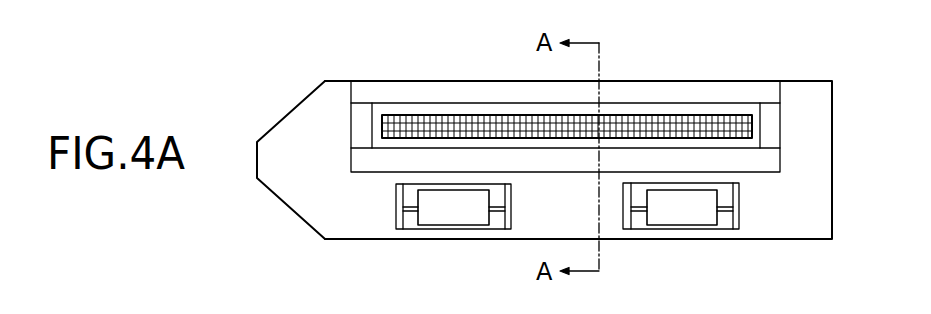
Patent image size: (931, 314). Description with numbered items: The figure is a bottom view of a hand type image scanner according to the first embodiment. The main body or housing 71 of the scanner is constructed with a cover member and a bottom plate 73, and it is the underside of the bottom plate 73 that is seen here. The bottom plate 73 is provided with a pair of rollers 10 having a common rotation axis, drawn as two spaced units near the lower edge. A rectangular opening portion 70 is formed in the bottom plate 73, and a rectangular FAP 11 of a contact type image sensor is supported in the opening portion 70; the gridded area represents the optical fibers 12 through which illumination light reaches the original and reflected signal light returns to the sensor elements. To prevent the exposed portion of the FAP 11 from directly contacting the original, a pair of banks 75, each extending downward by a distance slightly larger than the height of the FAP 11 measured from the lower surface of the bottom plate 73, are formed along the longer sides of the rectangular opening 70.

The rollers 10 is at (447, 210).
The FAP 11 is at (502, 108).
The optical fibers 12 is at (445, 120).
The opening portion 70 is at (708, 105).
The housing 71 is at (798, 79).
The bottom plate 73 is at (336, 95).
The banks 75 is at (661, 87).